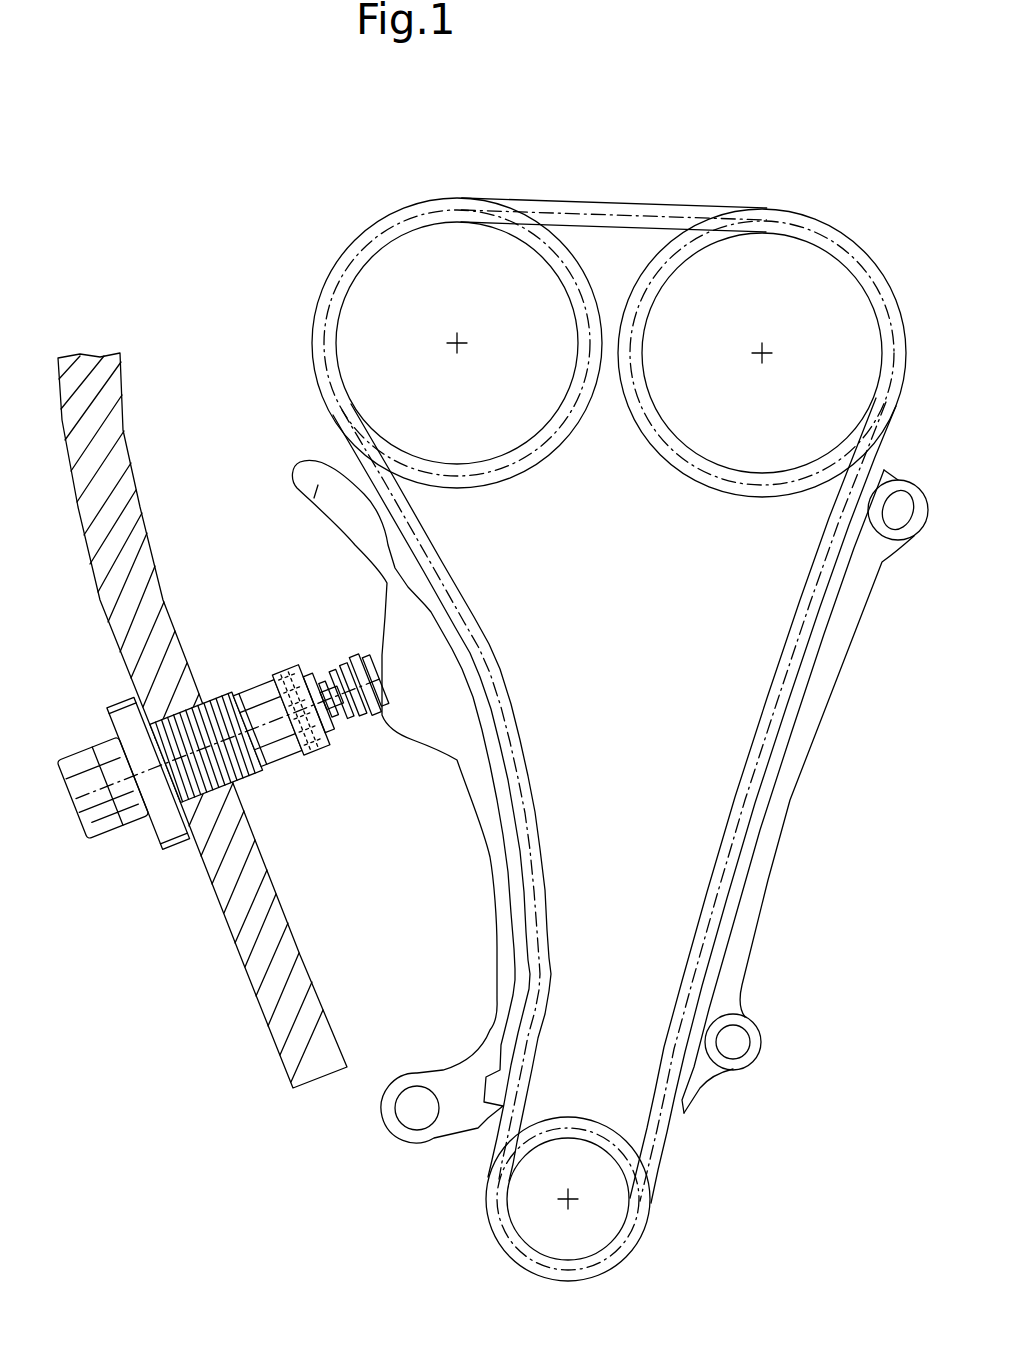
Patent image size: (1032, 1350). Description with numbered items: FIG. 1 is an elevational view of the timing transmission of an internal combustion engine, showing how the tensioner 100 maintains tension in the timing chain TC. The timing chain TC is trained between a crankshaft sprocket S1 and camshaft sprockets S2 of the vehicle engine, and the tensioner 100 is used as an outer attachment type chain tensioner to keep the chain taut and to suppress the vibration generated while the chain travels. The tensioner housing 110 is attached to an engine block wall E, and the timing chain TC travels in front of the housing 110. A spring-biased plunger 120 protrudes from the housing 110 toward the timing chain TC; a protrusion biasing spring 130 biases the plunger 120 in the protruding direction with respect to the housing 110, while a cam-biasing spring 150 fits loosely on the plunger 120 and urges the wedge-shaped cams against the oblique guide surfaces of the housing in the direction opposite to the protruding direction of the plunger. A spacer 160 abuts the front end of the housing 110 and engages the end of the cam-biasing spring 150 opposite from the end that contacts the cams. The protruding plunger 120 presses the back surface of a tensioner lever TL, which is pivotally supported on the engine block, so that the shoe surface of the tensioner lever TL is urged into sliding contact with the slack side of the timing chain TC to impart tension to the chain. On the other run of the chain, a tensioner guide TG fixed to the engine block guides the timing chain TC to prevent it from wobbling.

The tensioner 100 is at (248, 724).
The housing 110 is at (227, 739).
The plunger 120 is at (375, 680).
The protrusion biasing spring 130 is at (346, 692).
The cam-biasing spring 150 is at (301, 710).
The spacer 160 is at (301, 710).
The tensioner lever TL is at (486, 953).
The tensioner guide TG is at (782, 886).
The timing chain TC is at (637, 188).
The crankshaft sprocket S1 is at (608, 1224).
The camshaft sprockets S2 is at (457, 246).
The engine block wall E is at (247, 1001).